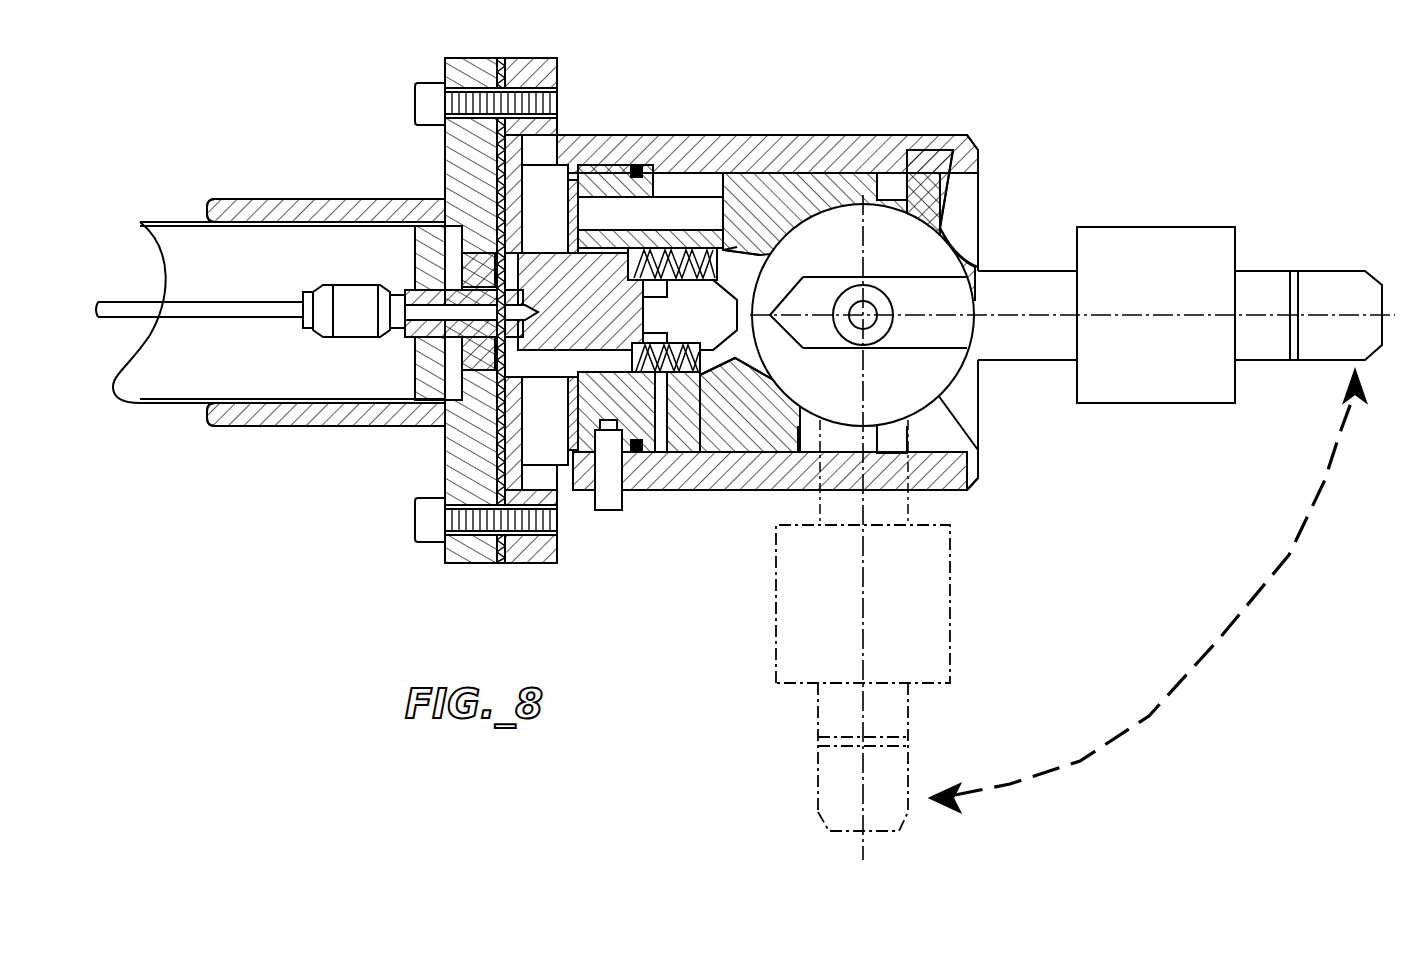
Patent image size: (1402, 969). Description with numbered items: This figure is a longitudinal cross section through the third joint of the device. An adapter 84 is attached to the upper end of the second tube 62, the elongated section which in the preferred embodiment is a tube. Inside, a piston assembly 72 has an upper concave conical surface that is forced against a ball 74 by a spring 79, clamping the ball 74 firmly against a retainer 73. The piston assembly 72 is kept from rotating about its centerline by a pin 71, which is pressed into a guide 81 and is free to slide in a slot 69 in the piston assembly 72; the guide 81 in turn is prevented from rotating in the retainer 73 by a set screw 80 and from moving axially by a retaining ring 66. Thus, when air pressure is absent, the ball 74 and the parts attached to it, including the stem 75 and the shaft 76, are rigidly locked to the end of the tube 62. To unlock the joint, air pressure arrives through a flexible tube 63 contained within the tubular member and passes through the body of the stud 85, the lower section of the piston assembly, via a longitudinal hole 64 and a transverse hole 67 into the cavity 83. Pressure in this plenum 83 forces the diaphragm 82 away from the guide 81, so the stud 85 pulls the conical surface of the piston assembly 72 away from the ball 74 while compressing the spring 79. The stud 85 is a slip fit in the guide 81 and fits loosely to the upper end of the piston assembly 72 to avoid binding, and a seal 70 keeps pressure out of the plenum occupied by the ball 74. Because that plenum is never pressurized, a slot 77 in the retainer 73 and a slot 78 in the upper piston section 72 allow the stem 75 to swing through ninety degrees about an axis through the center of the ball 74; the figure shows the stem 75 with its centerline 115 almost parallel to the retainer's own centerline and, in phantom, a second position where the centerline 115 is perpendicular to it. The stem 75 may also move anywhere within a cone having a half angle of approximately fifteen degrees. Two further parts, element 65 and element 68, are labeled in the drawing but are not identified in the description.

The second tube 62 is at (160, 408).
The flexible tube 63 is at (268, 300).
The longitudinal hole 64 is at (410, 322).
The bolt 65 is at (420, 85).
The retaining ring 66 is at (572, 140).
The transverse hole 67 is at (535, 385).
The seal ring 68 is at (634, 165).
The slot 69 is at (690, 178).
The seal 70 is at (645, 262).
The pin 71 is at (716, 190).
The piston assembly 72 is at (798, 150).
The retainer 73 is at (958, 132).
The ball 74 is at (986, 240).
The stem 75 is at (1010, 362).
The shaft 76 is at (1335, 272).
The slot 77 is at (838, 478).
The slot 78 is at (800, 470).
The spring 79 is at (700, 468).
The set screw 80 is at (608, 515).
The guide 81 is at (575, 470).
The diaphragm 82 is at (498, 565).
The cavity 83 is at (510, 190).
The adapter 84 is at (205, 215).
The stud 85 is at (400, 290).
The centerline of the stem 115 is at (860, 853).